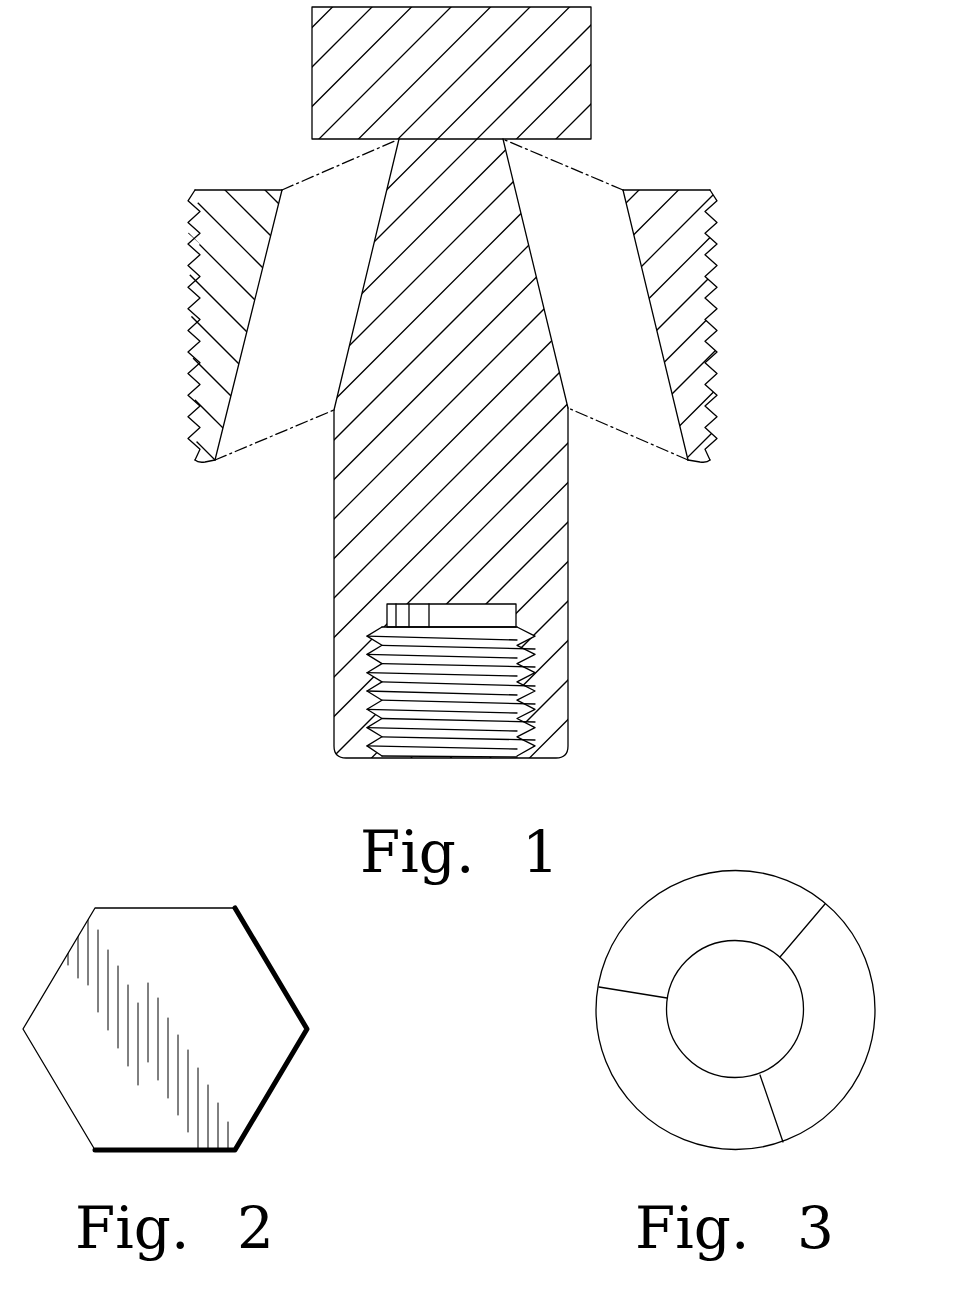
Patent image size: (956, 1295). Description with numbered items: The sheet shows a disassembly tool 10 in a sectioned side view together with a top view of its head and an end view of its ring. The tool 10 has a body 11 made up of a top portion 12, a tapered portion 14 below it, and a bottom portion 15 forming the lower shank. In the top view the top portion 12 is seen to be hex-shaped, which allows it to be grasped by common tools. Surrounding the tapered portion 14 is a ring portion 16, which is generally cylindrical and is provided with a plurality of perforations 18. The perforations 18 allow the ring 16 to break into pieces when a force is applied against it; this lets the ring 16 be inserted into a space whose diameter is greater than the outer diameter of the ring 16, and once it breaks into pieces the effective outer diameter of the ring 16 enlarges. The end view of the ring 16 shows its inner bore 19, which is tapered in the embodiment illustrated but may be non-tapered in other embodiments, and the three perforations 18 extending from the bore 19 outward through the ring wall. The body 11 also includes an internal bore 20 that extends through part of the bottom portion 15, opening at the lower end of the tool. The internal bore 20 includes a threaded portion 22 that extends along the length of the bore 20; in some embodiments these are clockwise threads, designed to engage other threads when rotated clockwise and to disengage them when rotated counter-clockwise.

In FIG. 1, the disassembly tool 10 is at (717, 77).
In FIG. 1, the body 11 is at (580, 519).
In FIG. 1, the top portion 12 is at (312, 68).
In FIG. 2, the top portion 12 is at (124, 908).
In FIG. 1, the tapered portion 14 is at (392, 172).
In FIG. 1, the bottom portion 15 is at (569, 587).
In FIG. 1, the ring portion 16 is at (208, 318).
In FIG. 3, the ring portion 16 is at (614, 1086).
In FIG. 3, the perforations 18 is at (800, 927).
In FIG. 1, the inner bore 19 is at (263, 284).
In FIG. 3, the inner bore 19 is at (728, 975).
In FIG. 1, the internal bore 20 is at (418, 717).
In FIG. 1, the threaded portion 22 is at (533, 681).